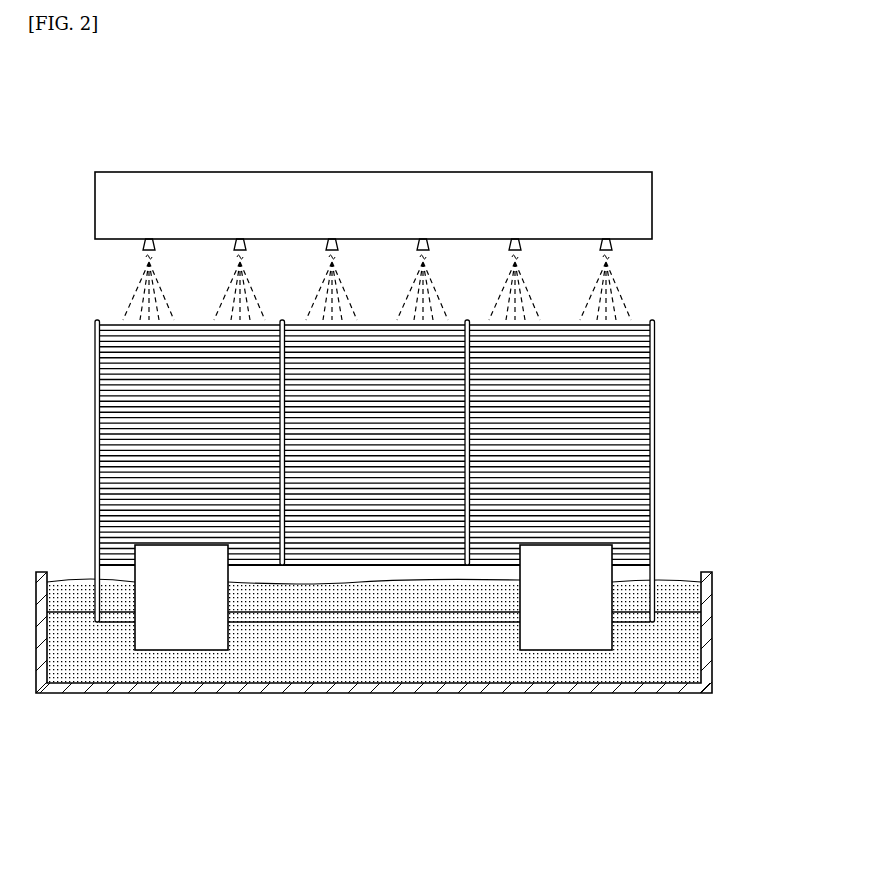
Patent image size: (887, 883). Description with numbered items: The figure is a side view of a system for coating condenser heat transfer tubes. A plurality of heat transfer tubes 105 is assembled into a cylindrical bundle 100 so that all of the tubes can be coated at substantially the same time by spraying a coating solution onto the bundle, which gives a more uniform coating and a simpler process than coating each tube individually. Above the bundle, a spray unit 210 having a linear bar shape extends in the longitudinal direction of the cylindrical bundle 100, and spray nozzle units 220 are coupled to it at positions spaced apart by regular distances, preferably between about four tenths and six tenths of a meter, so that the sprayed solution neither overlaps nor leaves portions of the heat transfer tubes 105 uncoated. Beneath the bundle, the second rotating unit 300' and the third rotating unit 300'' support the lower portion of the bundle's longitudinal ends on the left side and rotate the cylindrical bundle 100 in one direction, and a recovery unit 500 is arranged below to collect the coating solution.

The spray unit 210 is at (447, 187).
The spray nozzle units 220 is at (614, 246).
The cylindrical bundle 100 is at (392, 471).
The heat transfer tubes 105 is at (113, 472).
The recovery unit 500 is at (713, 635).
The third rotating unit 300'' is at (181, 661).
The second rotating unit 300' is at (566, 665).